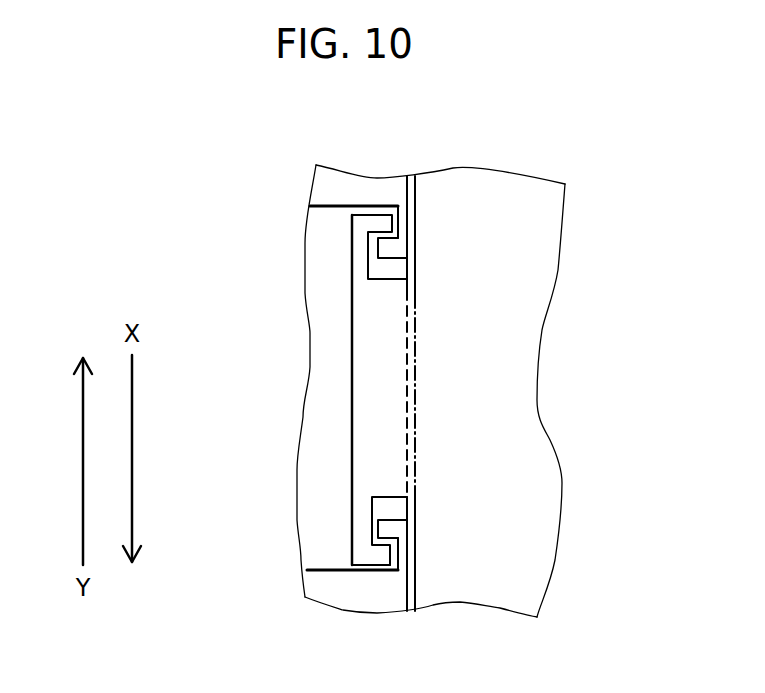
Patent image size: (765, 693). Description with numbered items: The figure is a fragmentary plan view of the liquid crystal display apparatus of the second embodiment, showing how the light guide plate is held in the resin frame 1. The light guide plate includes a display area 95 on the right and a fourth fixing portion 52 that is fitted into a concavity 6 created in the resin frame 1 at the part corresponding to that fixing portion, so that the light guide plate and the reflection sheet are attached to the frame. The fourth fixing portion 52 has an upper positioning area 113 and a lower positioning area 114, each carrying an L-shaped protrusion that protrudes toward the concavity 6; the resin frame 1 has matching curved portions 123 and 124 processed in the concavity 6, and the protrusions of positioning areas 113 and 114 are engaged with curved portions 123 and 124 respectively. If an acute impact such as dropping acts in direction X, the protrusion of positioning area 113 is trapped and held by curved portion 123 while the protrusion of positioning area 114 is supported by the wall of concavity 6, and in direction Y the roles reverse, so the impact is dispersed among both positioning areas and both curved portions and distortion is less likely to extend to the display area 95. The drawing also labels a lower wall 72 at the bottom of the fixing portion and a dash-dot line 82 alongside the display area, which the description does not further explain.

The resin frame 1 is at (357, 197).
The concavity 6 is at (322, 387).
The fourth fixing portion 52 is at (367, 425).
The bottom wall of slot 72 is at (367, 565).
The center axis line 82 is at (417, 417).
The display area 95 is at (522, 248).
The positioning area 113 is at (362, 257).
The positioning area 114 is at (362, 540).
The curved portion 123 is at (400, 228).
The curved portion 124 is at (398, 557).